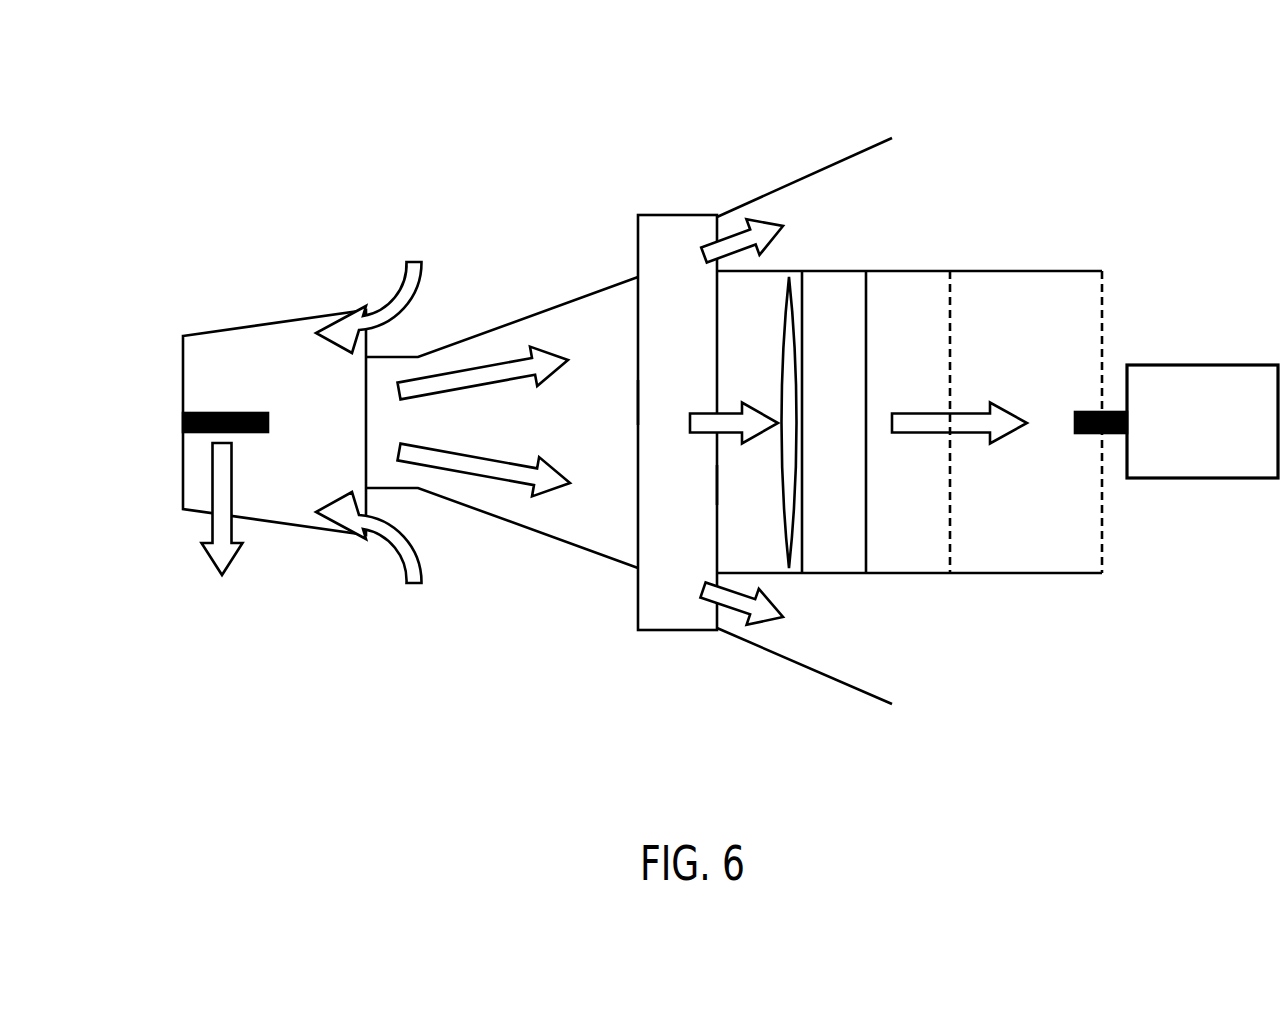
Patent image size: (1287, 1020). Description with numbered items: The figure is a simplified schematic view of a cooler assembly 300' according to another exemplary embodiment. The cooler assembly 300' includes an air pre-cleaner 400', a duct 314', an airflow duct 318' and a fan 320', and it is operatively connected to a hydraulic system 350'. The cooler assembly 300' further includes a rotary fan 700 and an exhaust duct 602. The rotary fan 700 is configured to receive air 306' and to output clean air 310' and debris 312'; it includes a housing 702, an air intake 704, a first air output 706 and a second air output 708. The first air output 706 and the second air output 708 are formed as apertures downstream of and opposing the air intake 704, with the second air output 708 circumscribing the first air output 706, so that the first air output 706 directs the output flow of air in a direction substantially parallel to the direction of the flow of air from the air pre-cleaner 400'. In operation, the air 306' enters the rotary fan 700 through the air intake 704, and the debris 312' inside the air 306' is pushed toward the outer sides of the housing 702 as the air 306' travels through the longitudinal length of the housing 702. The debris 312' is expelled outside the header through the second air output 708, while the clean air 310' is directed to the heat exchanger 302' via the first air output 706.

The cooler assembly 300' is at (667, 416).
The air pre-cleaner 400' is at (239, 422).
The duct 314' is at (502, 413).
The air 306' is at (484, 421).
The rotary fan 700 is at (608, 232).
The housing 702 is at (675, 215).
The air intake 704 is at (637, 402).
The first air output 706 is at (718, 485).
The second air output 708 is at (720, 225).
The exhaust duct 602 is at (872, 148).
The debris 312' is at (909, 456).
The output air 310' is at (655, 501).
The airflow duct 318' is at (851, 372).
The fan 320' is at (887, 384).
The heat exchanger 302' is at (967, 387).
The hydraulic system 350' is at (1164, 386).